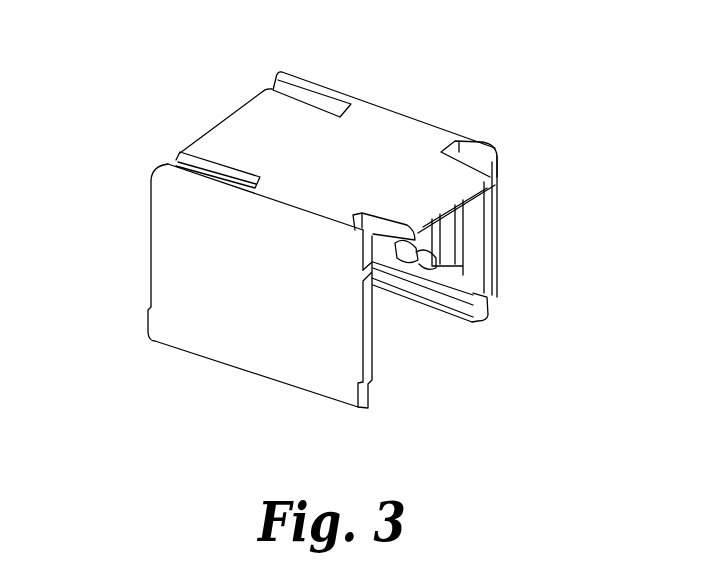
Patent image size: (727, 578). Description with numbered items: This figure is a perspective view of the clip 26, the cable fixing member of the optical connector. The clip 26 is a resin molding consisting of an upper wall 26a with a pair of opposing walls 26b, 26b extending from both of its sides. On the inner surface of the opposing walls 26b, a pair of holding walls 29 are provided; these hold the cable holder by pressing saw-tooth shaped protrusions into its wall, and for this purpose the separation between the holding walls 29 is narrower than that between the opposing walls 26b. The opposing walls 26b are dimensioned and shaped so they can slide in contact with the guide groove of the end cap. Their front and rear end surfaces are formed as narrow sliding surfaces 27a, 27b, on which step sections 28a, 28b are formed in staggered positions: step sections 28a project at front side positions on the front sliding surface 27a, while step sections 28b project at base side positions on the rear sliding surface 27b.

The clip 26 is at (401, 116).
The upper wall 26a is at (256, 130).
The opposing wall 26b is at (257, 315).
The front sliding surface 27a is at (150, 225).
The rear sliding surface 27b is at (370, 338).
The step section 28a is at (147, 313).
The step section 28b is at (372, 258).
The holding wall 29 is at (436, 249).